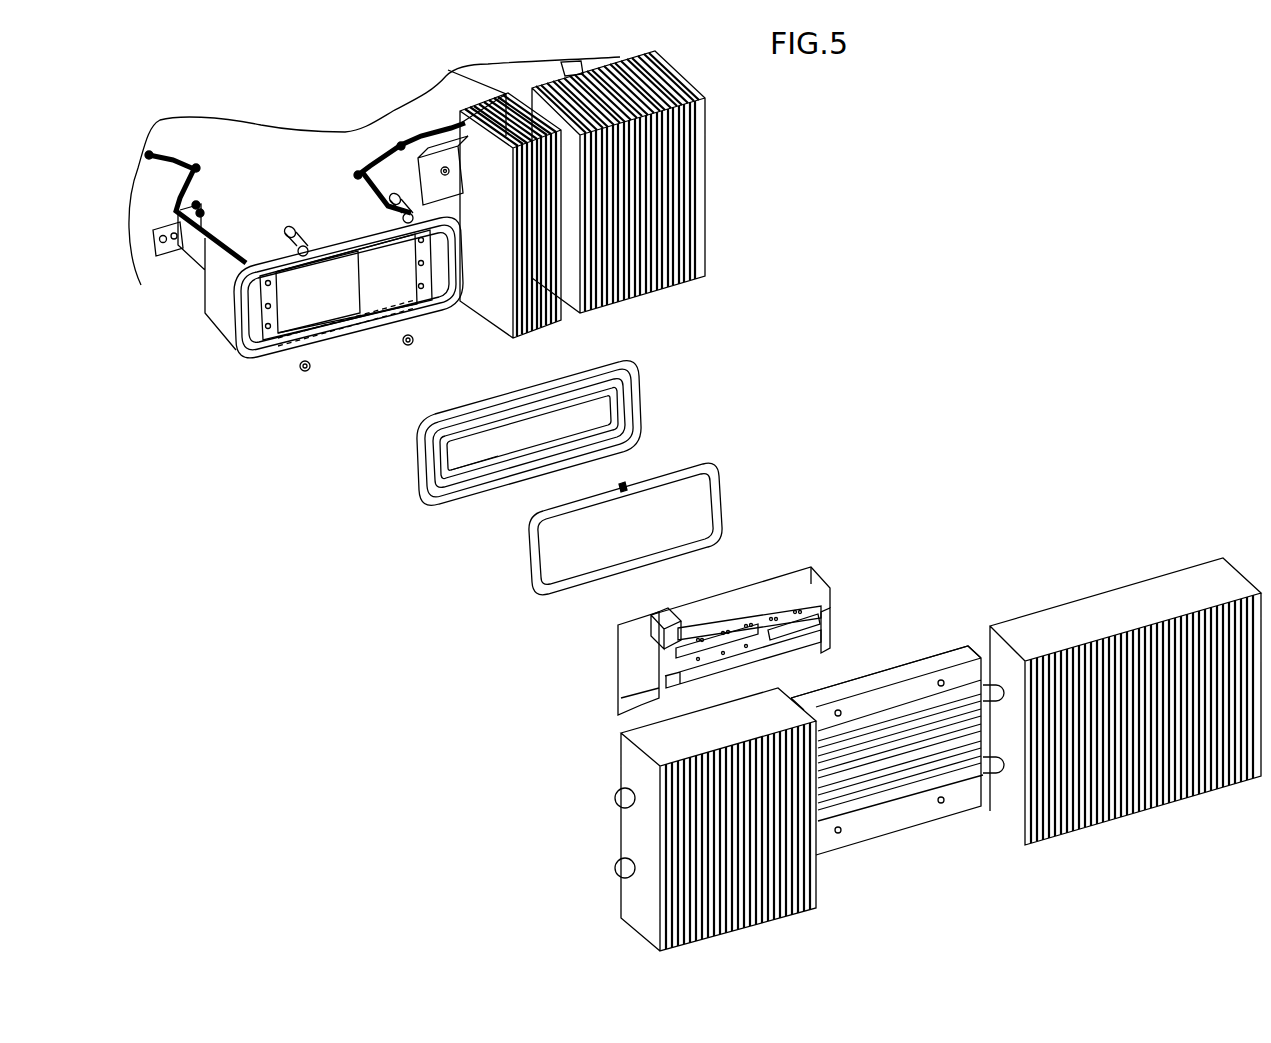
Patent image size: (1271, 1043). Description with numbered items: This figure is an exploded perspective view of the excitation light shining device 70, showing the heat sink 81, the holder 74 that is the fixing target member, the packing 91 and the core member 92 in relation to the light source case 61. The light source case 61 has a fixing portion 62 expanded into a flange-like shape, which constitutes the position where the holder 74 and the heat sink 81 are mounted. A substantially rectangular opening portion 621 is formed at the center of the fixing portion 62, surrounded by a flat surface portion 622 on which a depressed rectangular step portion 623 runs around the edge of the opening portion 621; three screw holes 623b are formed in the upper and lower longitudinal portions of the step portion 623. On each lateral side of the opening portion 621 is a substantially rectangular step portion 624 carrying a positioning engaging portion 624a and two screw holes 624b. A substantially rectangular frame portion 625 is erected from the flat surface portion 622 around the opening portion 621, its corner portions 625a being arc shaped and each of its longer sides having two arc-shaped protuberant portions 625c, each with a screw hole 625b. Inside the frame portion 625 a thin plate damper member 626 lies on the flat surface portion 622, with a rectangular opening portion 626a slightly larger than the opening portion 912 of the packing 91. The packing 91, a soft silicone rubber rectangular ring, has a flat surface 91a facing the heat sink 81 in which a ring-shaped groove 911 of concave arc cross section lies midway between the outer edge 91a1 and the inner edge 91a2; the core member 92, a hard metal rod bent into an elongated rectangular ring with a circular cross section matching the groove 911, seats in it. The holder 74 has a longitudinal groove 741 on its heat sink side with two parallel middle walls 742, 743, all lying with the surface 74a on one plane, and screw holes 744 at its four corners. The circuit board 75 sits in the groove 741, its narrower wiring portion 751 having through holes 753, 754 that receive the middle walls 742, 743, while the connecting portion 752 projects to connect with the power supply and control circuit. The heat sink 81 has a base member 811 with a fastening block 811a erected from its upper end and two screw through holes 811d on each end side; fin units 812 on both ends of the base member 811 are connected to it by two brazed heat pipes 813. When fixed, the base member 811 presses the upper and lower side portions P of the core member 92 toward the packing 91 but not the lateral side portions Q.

The excitation light shining device 70 is at (360, 698).
The light source case 61 is at (180, 281).
The fixing portion 62 is at (281, 366).
The opening portion 621 is at (308, 293).
The flat surface portion 622 is at (283, 347).
The step portion 623 is at (267, 333).
The screw holes 623b is at (332, 307).
The step portion 624 is at (257, 299).
The positioning engaging portion 624a is at (257, 262).
The screw holes 624b is at (257, 258).
The frame portion 625 is at (363, 337).
The corner portions 625a is at (147, 231).
The screw hole 625b is at (398, 210).
The protuberant portions 625c is at (378, 178).
The damper member 626 is at (253, 313).
The opening portion 626a is at (337, 245).
The packing 91 is at (640, 381).
The flat surface 91a is at (473, 405).
The groove 911 is at (490, 407).
The opening portion 912 is at (458, 448).
The outer edge 91a1 is at (480, 507).
The inner edge 91a2 is at (455, 488).
The core member 92 is at (724, 464).
The upper and lower side portions P is at (622, 548).
The lateral side portions Q is at (695, 488).
The holder 74 is at (823, 557).
The surface 74a is at (643, 612).
The groove 741 is at (813, 642).
The middle wall 742 is at (747, 617).
The middle wall 743 is at (803, 602).
The screw holes 744 is at (818, 583).
The wiring portion 751 is at (813, 617).
The connecting portion 752 is at (618, 675).
The through hole 753 is at (728, 622).
The through hole 754 is at (777, 600).
The circuit board 75 is at (612, 619).
The heat sink 81 is at (988, 568).
The base member 811 is at (840, 830).
The fastening block 811a is at (940, 643).
The screw through holes 811d is at (937, 797).
The fin units 812 is at (1097, 583).
The heat pipes 813 is at (870, 787).